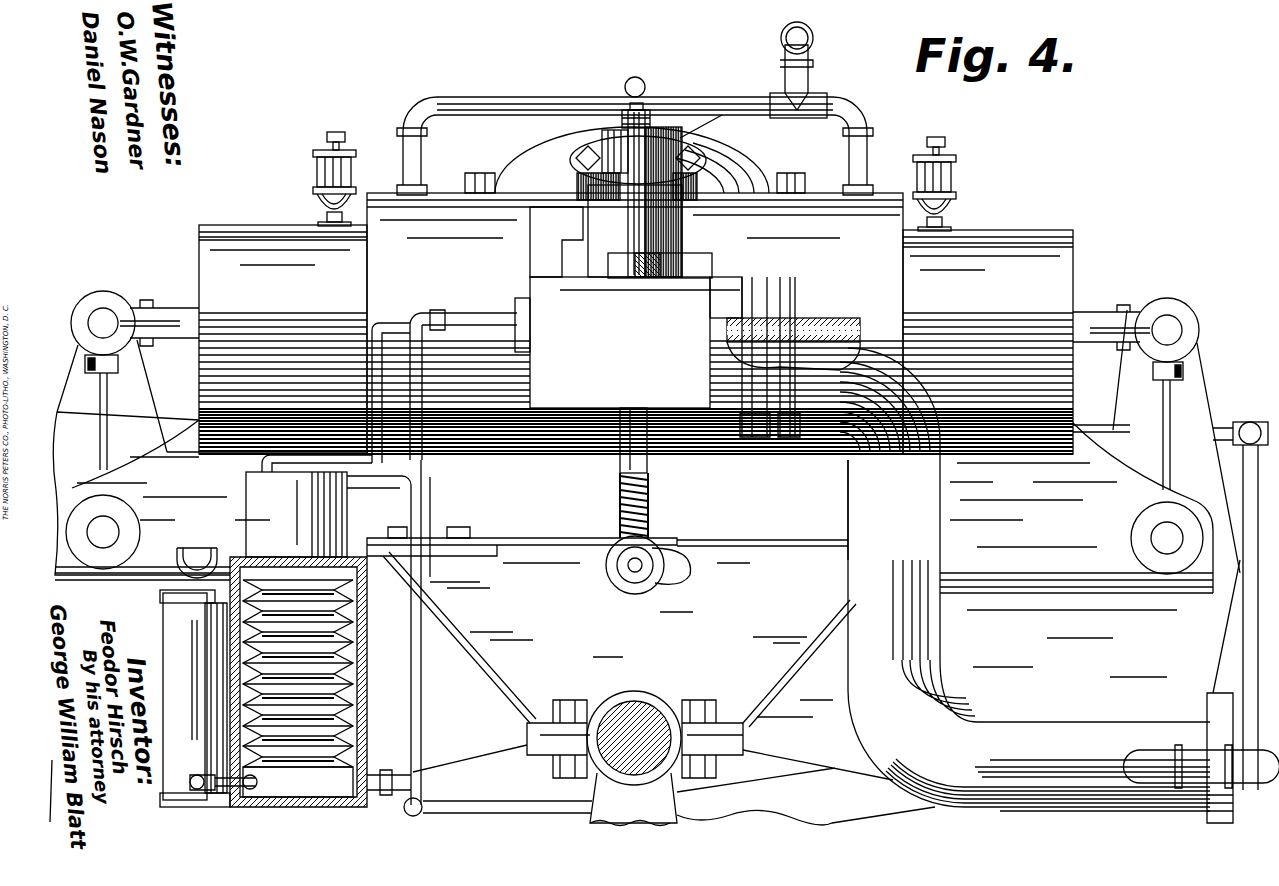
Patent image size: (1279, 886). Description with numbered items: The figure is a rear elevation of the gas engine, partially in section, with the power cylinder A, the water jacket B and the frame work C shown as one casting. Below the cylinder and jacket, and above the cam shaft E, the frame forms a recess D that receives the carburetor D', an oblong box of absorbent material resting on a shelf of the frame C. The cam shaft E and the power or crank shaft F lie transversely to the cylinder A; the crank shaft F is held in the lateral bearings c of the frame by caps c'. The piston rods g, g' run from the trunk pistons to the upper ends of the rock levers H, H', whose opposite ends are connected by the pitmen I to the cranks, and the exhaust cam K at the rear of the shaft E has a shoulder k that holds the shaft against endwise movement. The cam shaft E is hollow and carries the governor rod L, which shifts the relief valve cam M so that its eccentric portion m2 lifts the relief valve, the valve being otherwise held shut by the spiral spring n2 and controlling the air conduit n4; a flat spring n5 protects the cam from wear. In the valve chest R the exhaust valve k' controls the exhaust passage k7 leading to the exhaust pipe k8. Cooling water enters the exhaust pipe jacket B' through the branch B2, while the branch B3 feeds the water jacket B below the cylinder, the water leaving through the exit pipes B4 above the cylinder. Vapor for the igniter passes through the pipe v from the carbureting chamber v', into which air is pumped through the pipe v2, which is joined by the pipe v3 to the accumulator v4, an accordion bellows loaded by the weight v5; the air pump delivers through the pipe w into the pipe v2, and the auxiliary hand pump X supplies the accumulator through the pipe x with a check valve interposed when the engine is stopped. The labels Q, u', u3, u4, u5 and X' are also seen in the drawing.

The power cylinder A is at (636, 339).
The water jacket B is at (635, 313).
The exhaust pipe jacket B' is at (968, 557).
The water supply pipe branch B2 is at (1202, 622).
The water supply pipe branch B3 is at (1101, 416).
The exit pipes B4 is at (628, 108).
The frame work C is at (646, 564).
The lateral bearings c is at (635, 739).
The caps c' is at (641, 750).
The recess D is at (783, 564).
The carburetor D' is at (799, 510).
The cam shaft E is at (641, 597).
The power or crank shaft F is at (661, 713).
The piston rod g is at (1136, 339).
The piston rod g' is at (135, 332).
The rock lever H is at (1176, 441).
The rock lever H' is at (112, 405).
The pitman I is at (674, 785).
The exhaust cam K is at (601, 569).
The shoulder k is at (1167, 538).
The exhaust valve k' is at (103, 532).
The exhaust passage k7 is at (749, 357).
The exhaust pipe k8 is at (1013, 553).
The governor rod L is at (630, 585).
The relief valve cam M is at (658, 588).
The eccentric portion or cam surface m2 is at (678, 566).
The spiral spring n2 is at (396, 631).
The air pipe v2 is at (396, 631).
The air conduit n4 is at (556, 242).
The flat spring n5 is at (607, 535).
The dome Q is at (632, 157).
The valve chest R is at (628, 342).
The reservoir u' is at (296, 514).
The carbureting chamber v' is at (296, 514).
The valve u3 is at (389, 770).
The connecting pipe v3 is at (392, 775).
The bellows u4 is at (298, 688).
The accumulator v4 is at (298, 688).
The bellows casing u5 is at (298, 682).
The weight v5 is at (298, 682).
The vapor pipe v is at (389, 386).
The pump pipe w is at (498, 801).
The auxiliary hand pump X is at (195, 698).
The valve X' is at (193, 771).
The pipe x is at (262, 785).